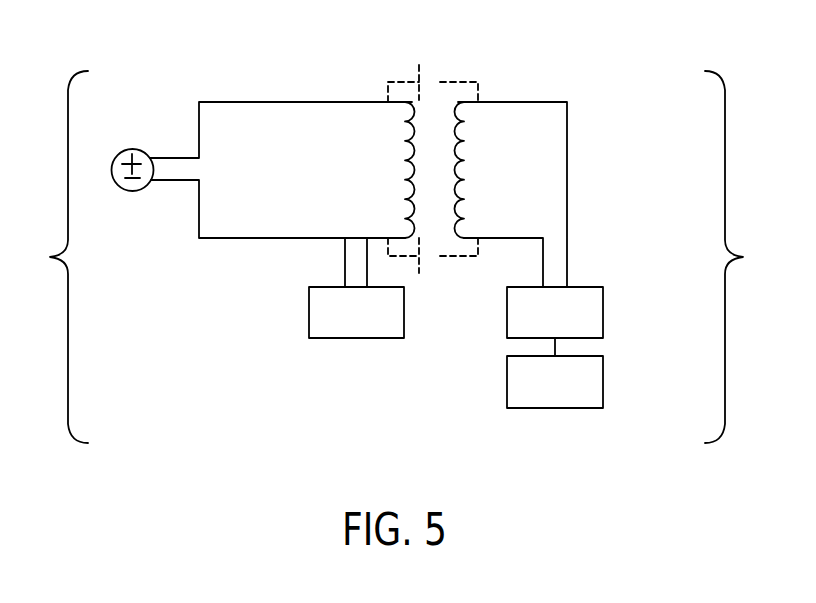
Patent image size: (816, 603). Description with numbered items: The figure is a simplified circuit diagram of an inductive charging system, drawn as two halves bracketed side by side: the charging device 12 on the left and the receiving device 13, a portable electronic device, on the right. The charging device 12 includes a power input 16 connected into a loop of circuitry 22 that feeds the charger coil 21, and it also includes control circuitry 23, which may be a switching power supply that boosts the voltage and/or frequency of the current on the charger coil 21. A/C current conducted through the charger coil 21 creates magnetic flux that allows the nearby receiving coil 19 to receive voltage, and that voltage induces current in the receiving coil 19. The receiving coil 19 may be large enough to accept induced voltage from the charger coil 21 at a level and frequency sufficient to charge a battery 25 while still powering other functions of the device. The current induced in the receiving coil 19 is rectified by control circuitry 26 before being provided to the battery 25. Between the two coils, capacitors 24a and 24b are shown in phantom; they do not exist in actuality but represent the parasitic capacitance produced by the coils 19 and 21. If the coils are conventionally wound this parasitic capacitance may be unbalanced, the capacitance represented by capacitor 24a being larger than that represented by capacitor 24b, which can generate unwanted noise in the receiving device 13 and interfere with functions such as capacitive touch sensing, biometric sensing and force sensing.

The charging device 12 is at (49, 257).
The receiving device 13 is at (745, 257).
The power input 16 is at (137, 150).
The power transmission circuit 22 is at (256, 239).
The charger coil 21 is at (411, 151).
The receiving coil 19 is at (459, 151).
The capacitor 24a is at (442, 92).
The capacitor 24b is at (441, 243).
The control circuitry 23 is at (308, 318).
The control circuitry 26 is at (603, 314).
The battery 25 is at (603, 383).